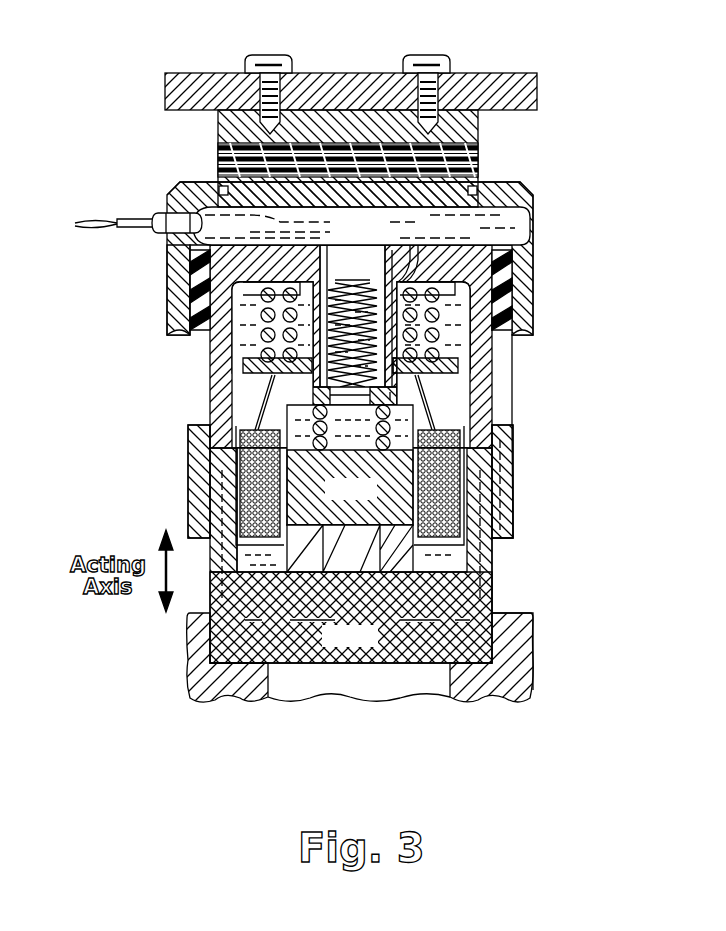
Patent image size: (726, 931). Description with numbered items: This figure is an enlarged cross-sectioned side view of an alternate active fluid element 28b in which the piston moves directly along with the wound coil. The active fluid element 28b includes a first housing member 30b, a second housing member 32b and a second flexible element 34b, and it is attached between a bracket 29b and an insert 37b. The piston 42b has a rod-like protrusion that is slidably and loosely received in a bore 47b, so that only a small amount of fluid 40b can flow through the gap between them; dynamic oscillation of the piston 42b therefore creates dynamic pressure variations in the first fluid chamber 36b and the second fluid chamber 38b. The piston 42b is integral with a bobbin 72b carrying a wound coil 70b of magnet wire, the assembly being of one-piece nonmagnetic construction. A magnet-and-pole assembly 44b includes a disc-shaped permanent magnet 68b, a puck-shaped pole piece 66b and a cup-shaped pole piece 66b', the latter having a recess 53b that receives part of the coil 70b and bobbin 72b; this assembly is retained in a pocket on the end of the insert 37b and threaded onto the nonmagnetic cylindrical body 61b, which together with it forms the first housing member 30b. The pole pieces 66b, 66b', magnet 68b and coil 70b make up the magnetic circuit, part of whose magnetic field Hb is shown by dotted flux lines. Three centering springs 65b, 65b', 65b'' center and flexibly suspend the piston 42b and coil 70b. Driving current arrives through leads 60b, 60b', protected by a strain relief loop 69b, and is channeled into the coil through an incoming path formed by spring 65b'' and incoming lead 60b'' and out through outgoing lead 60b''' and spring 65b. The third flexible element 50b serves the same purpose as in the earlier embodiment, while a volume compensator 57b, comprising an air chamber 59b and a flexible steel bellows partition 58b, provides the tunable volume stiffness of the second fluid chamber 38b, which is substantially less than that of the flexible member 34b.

The bracket 29b is at (335, 73).
The third flexible element 50b is at (478, 160).
The lead 60b is at (100, 188).
The lead 60b' is at (92, 261).
The strain relief loop 69b is at (485, 207).
The fluid 40b is at (535, 225).
The bore 47b is at (200, 232).
The first fluid chamber 36b is at (470, 237).
The air chamber 59b is at (375, 280).
The piston 42b is at (525, 255).
The second housing member 32b is at (535, 286).
The second flexible element 34b is at (170, 300).
The flexible partition 58b is at (475, 330).
The volume compensator 57b is at (395, 293).
The centering spring 65b is at (219, 365).
The second fluid chamber 38b is at (525, 365).
The centering spring 65b'' is at (210, 340).
The incoming lead 60b'' is at (506, 402).
The centering spring 65b' is at (494, 360).
The outgoing lead 60b''' is at (191, 412).
The active fluid element 28b is at (520, 462).
The magnet-and-pole assembly 44b is at (202, 478).
The pole piece 66b is at (350, 465).
The body 61b is at (190, 498).
The wound coil 70b is at (505, 500).
The first housing member 30b is at (520, 536).
The permanent magnet 68b is at (372, 560).
The bobbin 72b is at (472, 555).
The recess 53b is at (212, 565).
The pole piece 66b' is at (351, 617).
The insert 37b is at (530, 640).
The magnetic field Hb is at (225, 678).